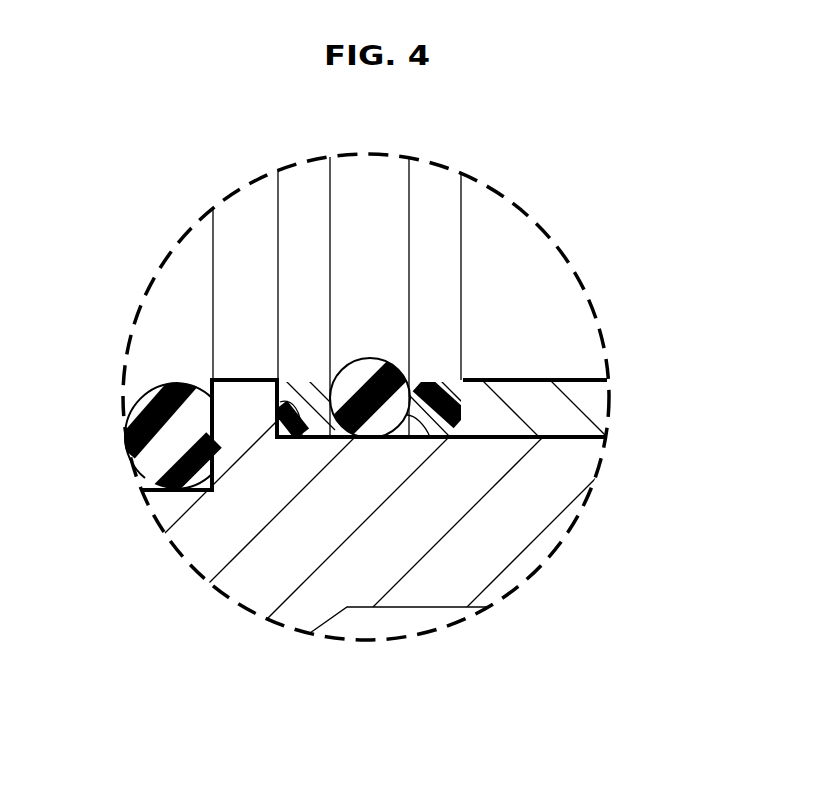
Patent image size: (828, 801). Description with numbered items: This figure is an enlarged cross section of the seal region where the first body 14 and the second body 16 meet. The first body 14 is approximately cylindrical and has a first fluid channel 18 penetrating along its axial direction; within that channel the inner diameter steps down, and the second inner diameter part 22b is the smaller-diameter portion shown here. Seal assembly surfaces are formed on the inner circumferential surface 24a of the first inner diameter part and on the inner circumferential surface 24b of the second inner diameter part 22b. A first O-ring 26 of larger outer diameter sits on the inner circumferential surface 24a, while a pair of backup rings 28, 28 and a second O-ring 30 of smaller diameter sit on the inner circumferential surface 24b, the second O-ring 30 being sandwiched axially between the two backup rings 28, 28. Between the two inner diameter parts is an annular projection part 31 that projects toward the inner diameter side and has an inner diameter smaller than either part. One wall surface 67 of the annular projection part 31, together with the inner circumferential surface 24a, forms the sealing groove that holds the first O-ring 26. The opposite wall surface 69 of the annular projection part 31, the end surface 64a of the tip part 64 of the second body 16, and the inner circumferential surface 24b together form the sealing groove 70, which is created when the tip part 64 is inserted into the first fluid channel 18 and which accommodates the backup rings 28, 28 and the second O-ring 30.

The first body 14 is at (376, 575).
The second body 16 is at (567, 440).
The first fluid channel 18 is at (505, 290).
The second inner diameter part 22b is at (486, 432).
The inner circumferential surface of the first inner diameter part 24a is at (183, 490).
The inner circumferential surface of the second inner diameter part 24b is at (430, 437).
The first O-ring 26 is at (135, 406).
The backup ring 28 is at (322, 386).
The second O-ring 30 is at (358, 378).
The annular projection part 31 is at (247, 378).
The tip part 64 is at (558, 412).
The end surface 64a is at (455, 437).
The wall surface 67 is at (212, 398).
The wall surface 69 is at (312, 437).
The sealing groove 70 is at (310, 440).